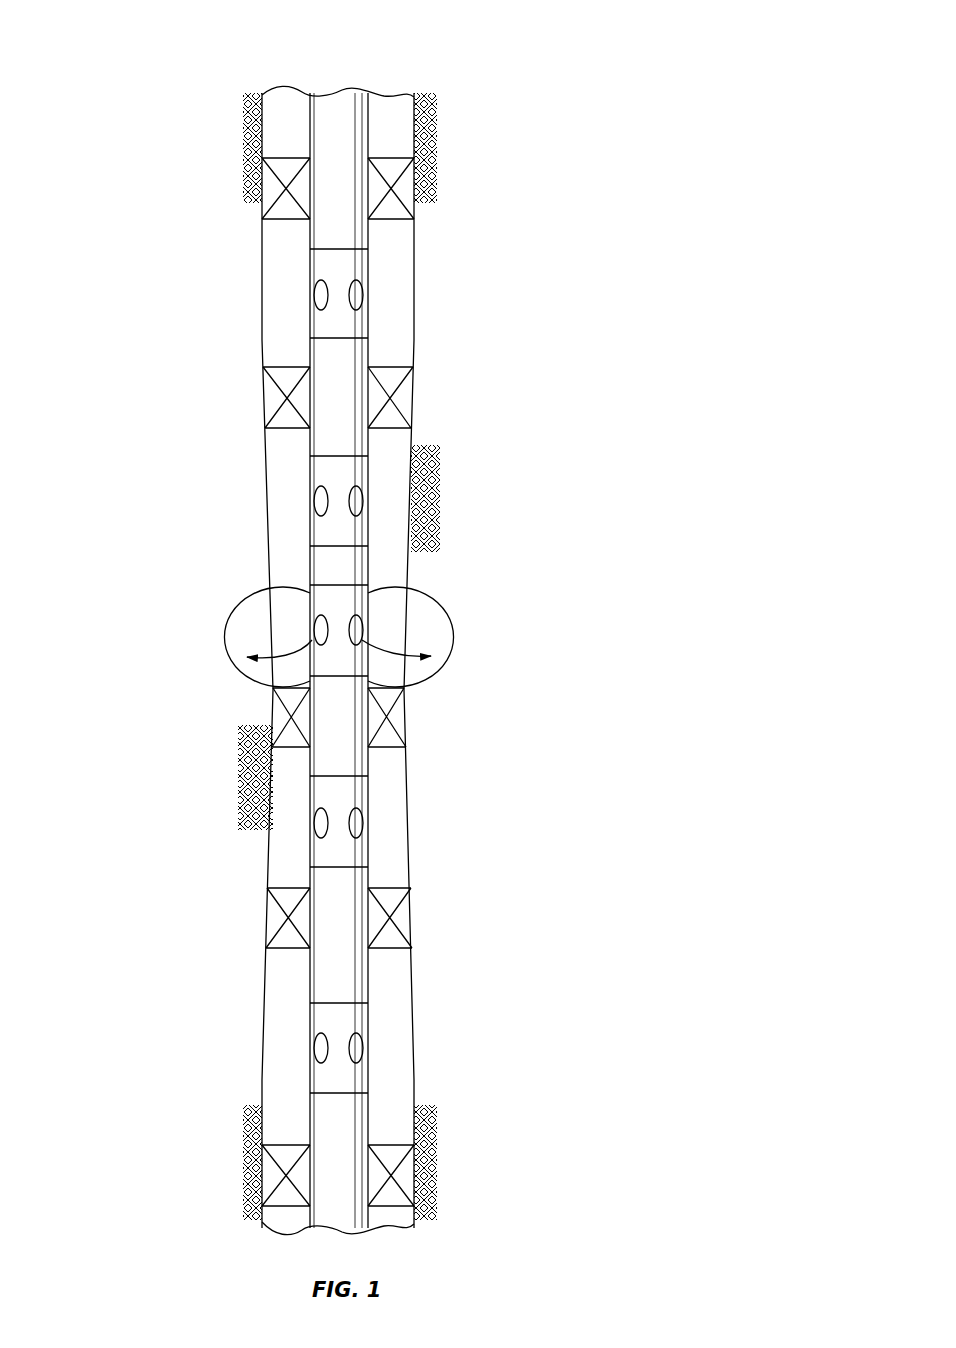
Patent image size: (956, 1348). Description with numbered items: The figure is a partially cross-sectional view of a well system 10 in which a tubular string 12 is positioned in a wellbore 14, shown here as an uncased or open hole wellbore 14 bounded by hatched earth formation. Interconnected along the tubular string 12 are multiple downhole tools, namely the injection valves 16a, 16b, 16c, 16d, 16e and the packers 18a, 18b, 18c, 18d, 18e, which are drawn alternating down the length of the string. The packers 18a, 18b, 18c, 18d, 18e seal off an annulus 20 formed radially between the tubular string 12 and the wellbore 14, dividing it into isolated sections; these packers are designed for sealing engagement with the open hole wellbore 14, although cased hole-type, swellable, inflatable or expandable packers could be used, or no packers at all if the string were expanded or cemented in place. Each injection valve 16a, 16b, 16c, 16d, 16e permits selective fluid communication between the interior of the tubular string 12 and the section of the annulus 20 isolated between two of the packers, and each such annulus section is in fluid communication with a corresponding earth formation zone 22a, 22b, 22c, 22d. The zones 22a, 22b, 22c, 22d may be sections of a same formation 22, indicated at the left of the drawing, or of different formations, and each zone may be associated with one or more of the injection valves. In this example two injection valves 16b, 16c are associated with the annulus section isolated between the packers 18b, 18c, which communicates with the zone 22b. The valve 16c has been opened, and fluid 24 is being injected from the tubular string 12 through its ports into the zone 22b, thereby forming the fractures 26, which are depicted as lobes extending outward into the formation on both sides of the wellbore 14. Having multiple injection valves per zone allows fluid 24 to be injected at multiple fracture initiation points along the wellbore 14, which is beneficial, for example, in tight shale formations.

The system 10 is at (579, 121).
The tubular string 12 is at (378, 110).
The wellbore 14 is at (412, 289).
The injection valve 16a is at (310, 264).
The injection valve 16b is at (310, 521).
The injection valve 16c is at (310, 597).
The injection valve 16d is at (310, 846).
The injection valve 16e is at (310, 1020).
The packer 18a is at (393, 221).
The packer 18b is at (262, 391).
The packer 18c is at (382, 748).
The packer 18d is at (408, 917).
The packer 18e is at (387, 1145).
The annulus 20 is at (282, 492).
The formation 22 is at (76, 743).
The earth formation zone 22a is at (541, 293).
The earth formation zone 22b is at (546, 567).
The earth formation zone 22c is at (543, 848).
The earth formation zone 22d is at (543, 1035).
The fluid 24 is at (312, 646).
The fractures 26 is at (225, 633).